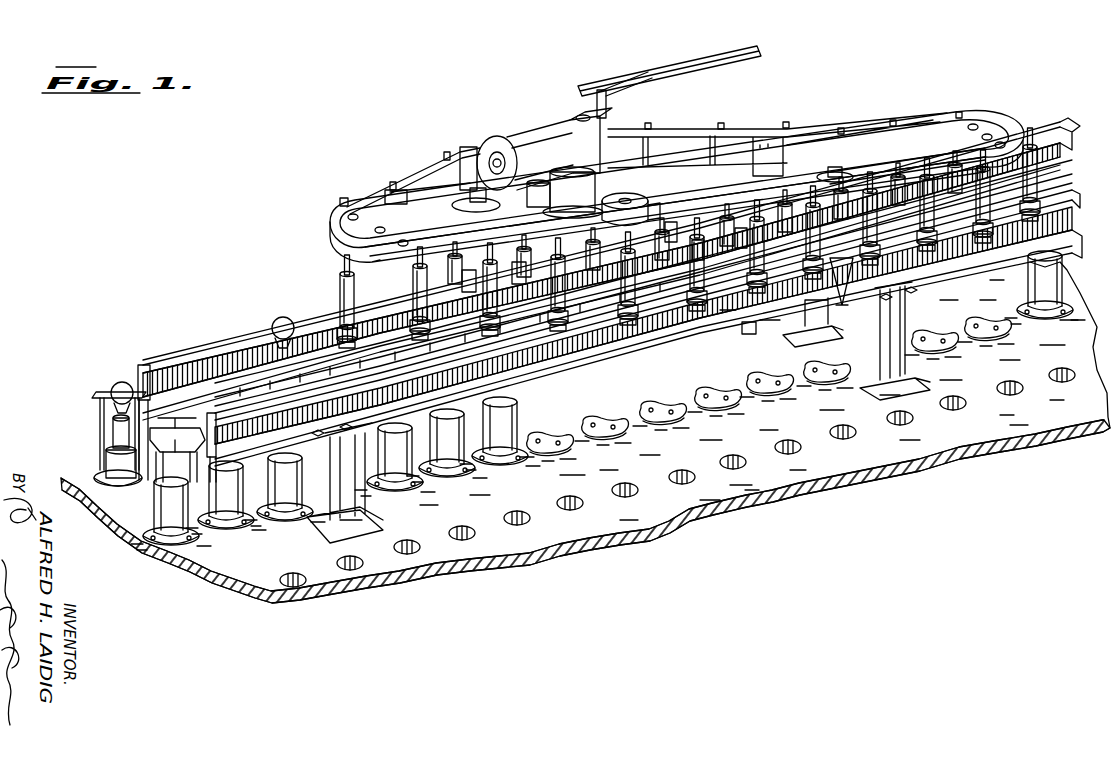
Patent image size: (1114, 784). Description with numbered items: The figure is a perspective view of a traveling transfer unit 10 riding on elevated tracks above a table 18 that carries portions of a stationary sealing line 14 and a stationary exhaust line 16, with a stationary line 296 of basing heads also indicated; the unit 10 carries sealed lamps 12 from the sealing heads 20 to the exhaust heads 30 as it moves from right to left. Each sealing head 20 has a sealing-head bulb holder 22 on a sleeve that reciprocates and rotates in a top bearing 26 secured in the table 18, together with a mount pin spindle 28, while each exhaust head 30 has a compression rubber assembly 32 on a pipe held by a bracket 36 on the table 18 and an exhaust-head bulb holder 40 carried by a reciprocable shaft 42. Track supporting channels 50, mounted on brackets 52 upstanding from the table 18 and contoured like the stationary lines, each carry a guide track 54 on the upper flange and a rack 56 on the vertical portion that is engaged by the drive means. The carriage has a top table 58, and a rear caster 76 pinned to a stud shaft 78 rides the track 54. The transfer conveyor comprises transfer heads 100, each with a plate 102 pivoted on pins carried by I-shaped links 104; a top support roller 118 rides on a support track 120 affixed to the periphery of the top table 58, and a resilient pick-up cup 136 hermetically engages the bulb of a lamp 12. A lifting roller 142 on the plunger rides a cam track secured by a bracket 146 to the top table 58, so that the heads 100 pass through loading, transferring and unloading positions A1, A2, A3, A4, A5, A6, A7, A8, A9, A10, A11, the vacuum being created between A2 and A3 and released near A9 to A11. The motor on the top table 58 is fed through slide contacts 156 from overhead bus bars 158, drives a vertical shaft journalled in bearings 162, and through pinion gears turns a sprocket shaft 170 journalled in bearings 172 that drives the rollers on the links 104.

The transfer unit 10 is at (50, 166).
The sealed lamp 12 is at (275, 320).
The stationary sealing line 14 is at (261, 314).
The stationary exhaust line 16 is at (260, 531).
The table 18 is at (985, 455).
The sealing head 20 is at (88, 421).
The sealing-head bulb holder 22 is at (92, 395).
The top bearing 26 is at (105, 470).
The mount pin spindle 28 is at (112, 432).
The exhaust head 30 is at (1023, 294).
The compression rubber assembly 32 is at (215, 490).
The bracket 36 is at (160, 545).
The exhaust-head bulb holder 40 is at (96, 485).
The shaft 42 is at (143, 514).
The track supporting channel 50 is at (200, 395).
The bracket 52 is at (330, 535).
The guide track 54 is at (250, 348).
The rack 56 is at (170, 372).
The top table 58 is at (920, 145).
The rear caster 76 is at (855, 300).
The stud shaft 78 is at (845, 168).
The transfer head 100 is at (775, 222).
The plate 102 is at (470, 270).
The I-shaped link 104 is at (520, 262).
The top support roller 118 is at (740, 228).
The support track 120 is at (672, 222).
The pick-up cup 136 is at (748, 334).
The lifting roller 142 is at (1025, 127).
The bracket 146 is at (805, 135).
The slide contacts 156 is at (632, 88).
The overhead bus bars 158 is at (761, 50).
The bearings 162 is at (597, 185).
The sprocket shaft 170 is at (626, 199).
The bearings 172 is at (652, 196).
The stationary line of basing heads 296 is at (626, 506).
The loading position A1 is at (402, 181).
The loading position A2 is at (394, 181).
The loading position A3 is at (447, 142).
The transferring position A4 is at (532, 155).
The transferring position A5 is at (581, 114).
The transferring position A6 is at (649, 117).
The transferring position A7 is at (719, 121).
The transferring position A8 is at (785, 114).
The unloading position A9 is at (840, 121).
The unloading position A10 is at (892, 113).
The unloading position A11 is at (964, 103).